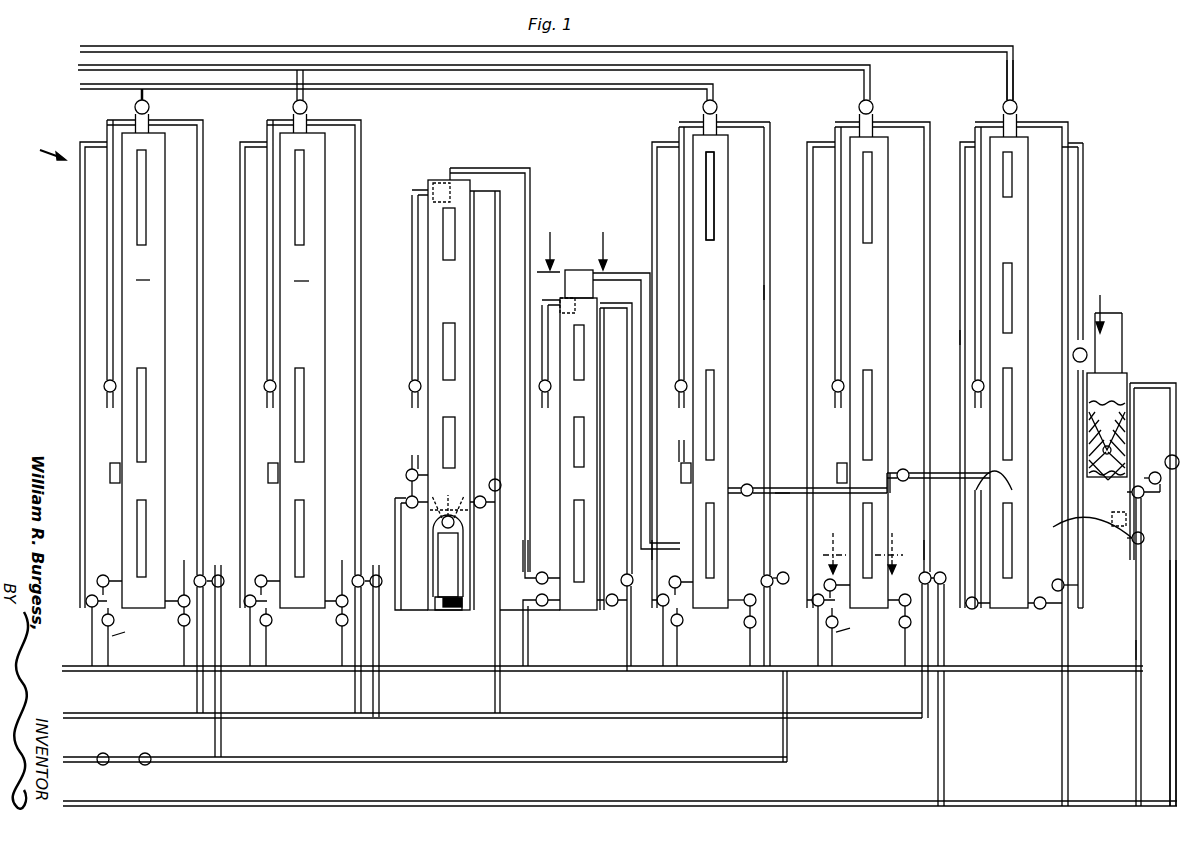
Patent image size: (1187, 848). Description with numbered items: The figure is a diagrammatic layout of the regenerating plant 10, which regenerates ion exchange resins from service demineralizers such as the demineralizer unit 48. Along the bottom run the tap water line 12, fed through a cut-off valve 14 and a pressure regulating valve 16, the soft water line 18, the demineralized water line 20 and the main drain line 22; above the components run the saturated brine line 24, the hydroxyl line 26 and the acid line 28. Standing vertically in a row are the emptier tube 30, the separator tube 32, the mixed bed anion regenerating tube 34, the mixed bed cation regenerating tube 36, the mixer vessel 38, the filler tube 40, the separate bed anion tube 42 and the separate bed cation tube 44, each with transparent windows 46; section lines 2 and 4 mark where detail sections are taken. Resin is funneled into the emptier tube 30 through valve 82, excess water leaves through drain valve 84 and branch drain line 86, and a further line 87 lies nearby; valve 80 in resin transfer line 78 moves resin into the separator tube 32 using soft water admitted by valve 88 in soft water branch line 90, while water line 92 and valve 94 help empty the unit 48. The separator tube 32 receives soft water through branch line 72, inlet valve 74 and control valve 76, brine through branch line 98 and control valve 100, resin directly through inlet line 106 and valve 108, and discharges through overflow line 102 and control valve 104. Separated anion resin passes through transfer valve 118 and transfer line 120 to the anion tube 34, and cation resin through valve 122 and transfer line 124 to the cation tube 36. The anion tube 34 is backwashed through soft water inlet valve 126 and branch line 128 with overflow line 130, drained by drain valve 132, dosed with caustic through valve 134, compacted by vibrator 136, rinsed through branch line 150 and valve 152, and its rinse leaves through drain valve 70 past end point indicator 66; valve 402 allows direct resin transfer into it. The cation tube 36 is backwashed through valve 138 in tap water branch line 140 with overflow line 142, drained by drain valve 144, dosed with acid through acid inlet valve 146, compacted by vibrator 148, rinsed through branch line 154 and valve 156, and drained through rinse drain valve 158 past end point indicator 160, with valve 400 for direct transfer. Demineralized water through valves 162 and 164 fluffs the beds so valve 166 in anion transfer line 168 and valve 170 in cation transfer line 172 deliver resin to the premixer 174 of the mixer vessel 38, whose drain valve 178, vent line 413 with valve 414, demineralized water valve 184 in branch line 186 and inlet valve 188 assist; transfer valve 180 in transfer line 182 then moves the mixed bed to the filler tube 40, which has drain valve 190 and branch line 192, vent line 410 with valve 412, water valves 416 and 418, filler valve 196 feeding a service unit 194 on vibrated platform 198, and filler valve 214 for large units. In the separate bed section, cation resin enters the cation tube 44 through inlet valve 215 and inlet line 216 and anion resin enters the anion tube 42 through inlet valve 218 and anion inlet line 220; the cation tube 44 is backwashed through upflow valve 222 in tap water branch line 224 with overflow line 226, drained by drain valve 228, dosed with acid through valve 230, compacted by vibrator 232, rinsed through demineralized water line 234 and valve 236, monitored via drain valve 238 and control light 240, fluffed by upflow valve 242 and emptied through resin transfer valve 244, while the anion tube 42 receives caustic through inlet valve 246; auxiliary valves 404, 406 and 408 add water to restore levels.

The regenerating plant 10 is at (40, 149).
The tap water line 12 is at (298, 757).
The cut-off valve 14 is at (104, 765).
The pressure regulating valve 16 is at (152, 764).
The soft water line 18 is at (340, 801).
The demineralized water line 20 is at (328, 713).
The main drain line 22 is at (385, 673).
The saturated brine line 24 is at (193, 46).
The hydroxyl line 26 is at (246, 66).
The acid line 28 is at (279, 86).
The emptier tube 30 is at (1108, 397).
The separator tube 32 is at (1047, 186).
The mixed bed anion regenerating tube 34 is at (899, 153).
The mixed bed cation regenerating tube 36 is at (745, 155).
The mixer vessel 38 is at (583, 253).
The filler tube 40 is at (441, 180).
The separate bed anion exchange tube 42 is at (352, 165).
The separate bed cation regenerating tube 44 is at (168, 157).
The transparent windows 46 is at (714, 230).
The service demineralizer 48 is at (1100, 295).
The electric signal device 66 is at (840, 638).
The drain valve 70 is at (828, 676).
The branch line 72 is at (1063, 723).
The inlet valve 74 is at (1083, 618).
The control valve 76 is at (1065, 585).
The resin transfer line 78 is at (1083, 205).
The valve 80 is at (1073, 355).
The valve 82 is at (1126, 432).
The drain valve 84 is at (1132, 540).
The branch drain line 86 is at (1132, 492).
The conduit 87 is at (1136, 648).
The valve 88 is at (1081, 533).
The soft water branch line 90 is at (1172, 720).
The water line 92 is at (1137, 380).
The valve 94 is at (1166, 460).
The branch line 98 is at (1014, 62).
The control valve 100 is at (1017, 104).
The overflow line 102 is at (962, 218).
The control valve 104 is at (972, 610).
The resin inlet line 106 is at (977, 262).
The valve 108 is at (972, 390).
The transfer valve 118 is at (903, 469).
The transfer line 120 is at (1000, 486).
The valve 122 is at (747, 484).
The transfer line 124 is at (780, 486).
The soft water inlet valve 126 is at (945, 687).
The branch line 128 is at (945, 770).
The overflow line 130 is at (769, 292).
The drain valve 132 is at (812, 672).
The valve 134 is at (873, 103).
The vibrator 136 is at (837, 473).
The valve 138 is at (750, 630).
The tap water branch line 140 is at (783, 697).
The overflow line 142 is at (652, 153).
The drain valve 144 is at (632, 586).
The acid inlet valve 146 is at (716, 104).
The vibrator 148 is at (684, 460).
The branch line 150 is at (962, 337).
The valve 152 is at (933, 557).
The branch line 154 is at (770, 220).
The valve 156 is at (750, 594).
The regenerant rinse drain valve 158 is at (679, 632).
The end point indicator 160 is at (666, 672).
The valve 162 is at (900, 628).
The valve 164 is at (758, 584).
The valve 166 is at (836, 588).
The anion transfer line 168 is at (691, 478).
The valve 170 is at (684, 622).
The cation transfer line 172 is at (667, 545).
The premixer 174 is at (568, 268).
The drain valve 178 is at (543, 607).
The transfer valve 180 is at (540, 568).
The transfer line 182 is at (530, 170).
The demineralized water valve 184 is at (624, 574).
The branch line 186 is at (617, 393).
The demineralized water inlet valve 188 is at (612, 607).
The drain valve 190 is at (406, 477).
The branch line 192 is at (398, 548).
The service demineralizer unit 194 is at (463, 603).
The filler valve 196 is at (449, 499).
The platform 198 is at (437, 617).
The filler valve 214 is at (412, 460).
The inlet valve 215 is at (104, 386).
The inlet line 216 is at (107, 218).
The inlet valve 218 is at (264, 386).
The anion inlet line 220 is at (267, 203).
The tap water upflow valve 222 is at (186, 672).
The tap water branch line 224 is at (223, 737).
The overflow line 226 is at (80, 193).
The drain valve 228 is at (90, 672).
The valve 230 is at (135, 107).
The vibrator 232 is at (110, 468).
The demineralized water line 234 is at (205, 145).
The valve 236 is at (217, 565).
The drain valve 238 is at (115, 617).
The end point quality control light 240 is at (118, 640).
The upflow demineralized water valve 242 is at (184, 562).
The resin transfer valve 244 is at (103, 575).
The inlet valve 246 is at (307, 107).
The valve 400 is at (687, 382).
The valve 402 is at (831, 387).
The auxiliary valve 404 is at (945, 637).
The auxiliary valve 406 is at (783, 572).
The auxiliary valve 408 is at (250, 565).
The line 410 is at (420, 190).
The valve 412 is at (409, 386).
The line 413 is at (545, 315).
The valve 414 is at (551, 388).
The valve 416 is at (486, 503).
The valve 418 is at (501, 483).
The section line 2- 2 is at (860, 541).
The section line 4- 4 is at (578, 241).